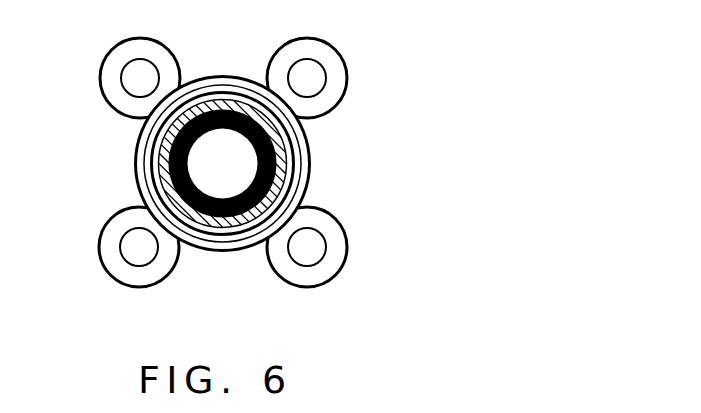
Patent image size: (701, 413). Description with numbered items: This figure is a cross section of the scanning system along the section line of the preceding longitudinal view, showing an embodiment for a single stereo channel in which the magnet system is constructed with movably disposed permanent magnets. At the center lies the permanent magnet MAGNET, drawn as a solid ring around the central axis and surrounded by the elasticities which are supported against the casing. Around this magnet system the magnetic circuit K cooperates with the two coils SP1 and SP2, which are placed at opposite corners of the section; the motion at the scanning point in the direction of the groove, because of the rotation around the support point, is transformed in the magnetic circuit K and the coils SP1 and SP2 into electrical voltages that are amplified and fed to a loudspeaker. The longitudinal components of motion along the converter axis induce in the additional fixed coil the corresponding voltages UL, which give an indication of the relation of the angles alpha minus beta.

The coil SP1 is at (140, 65).
The coil SP2 is at (332, 247).
The magnetic circuit K is at (153, 65).
The voltage of the additional fixed coil UL is at (310, 155).
The permanent magnet MAGNET is at (221, 180).